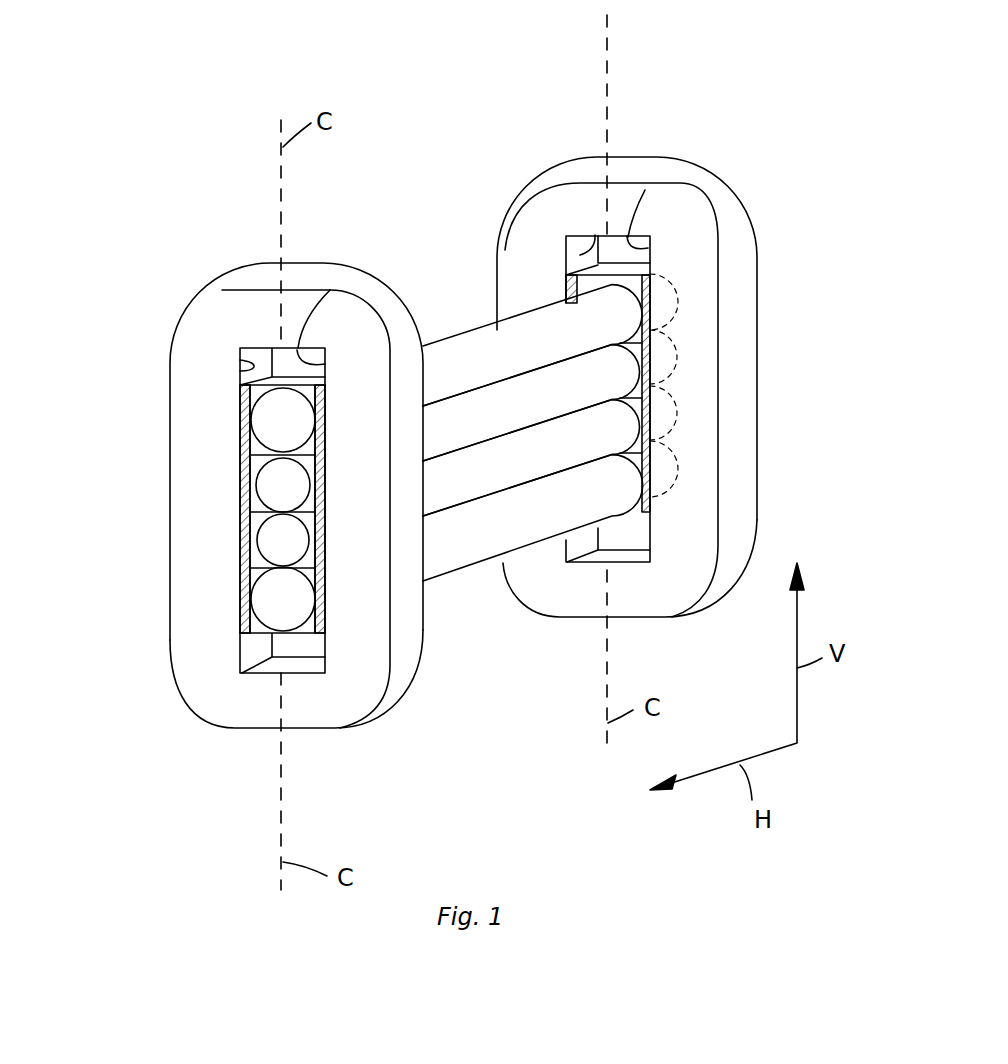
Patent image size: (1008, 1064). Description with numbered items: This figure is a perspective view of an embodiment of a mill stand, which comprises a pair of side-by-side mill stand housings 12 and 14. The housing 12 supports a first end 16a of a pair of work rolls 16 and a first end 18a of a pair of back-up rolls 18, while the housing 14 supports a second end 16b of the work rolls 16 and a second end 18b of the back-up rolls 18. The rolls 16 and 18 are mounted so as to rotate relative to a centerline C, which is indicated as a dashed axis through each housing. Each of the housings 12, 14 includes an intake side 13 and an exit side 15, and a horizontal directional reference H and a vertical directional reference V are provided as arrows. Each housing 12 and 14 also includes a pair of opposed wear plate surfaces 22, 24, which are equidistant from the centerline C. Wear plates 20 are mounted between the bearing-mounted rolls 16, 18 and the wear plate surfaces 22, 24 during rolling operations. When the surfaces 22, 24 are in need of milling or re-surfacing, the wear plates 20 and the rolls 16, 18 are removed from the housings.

The mill stand housing 12 is at (227, 283).
The intake side 13 is at (168, 455).
The mill stand housing 14 is at (717, 163).
The exit side 15 is at (388, 690).
The work rolls 16 is at (532, 429).
The first end of work rolls 16a is at (283, 512).
The second end of work rolls 16b is at (683, 350).
The back-up rolls 18 is at (533, 433).
The first end of back-up rolls 18a is at (283, 509).
The second end of back-up rolls 18b is at (680, 298).
The wear plates 20 is at (236, 408).
The wear plate surface 22 is at (236, 360).
The wear plate surface 24 is at (330, 290).